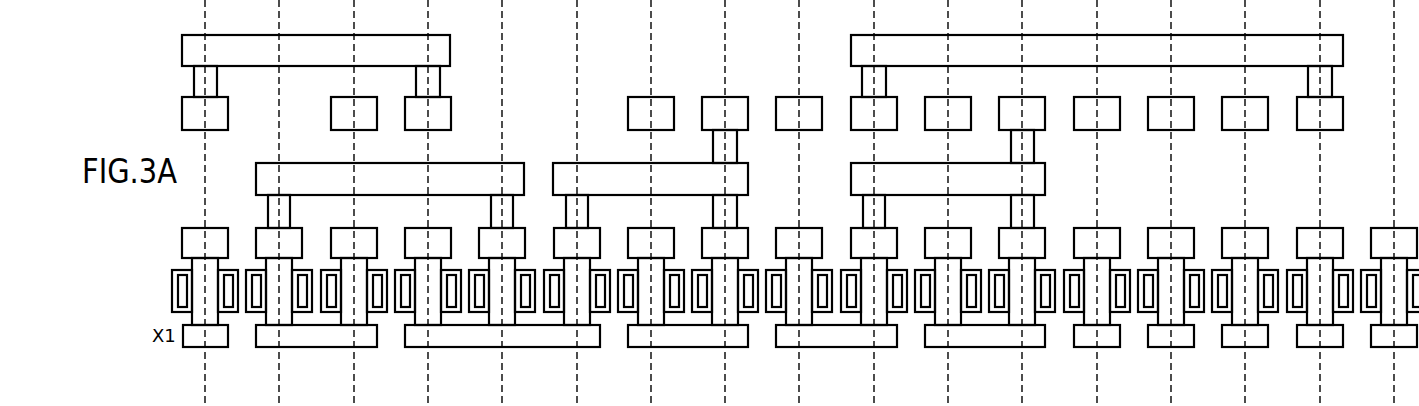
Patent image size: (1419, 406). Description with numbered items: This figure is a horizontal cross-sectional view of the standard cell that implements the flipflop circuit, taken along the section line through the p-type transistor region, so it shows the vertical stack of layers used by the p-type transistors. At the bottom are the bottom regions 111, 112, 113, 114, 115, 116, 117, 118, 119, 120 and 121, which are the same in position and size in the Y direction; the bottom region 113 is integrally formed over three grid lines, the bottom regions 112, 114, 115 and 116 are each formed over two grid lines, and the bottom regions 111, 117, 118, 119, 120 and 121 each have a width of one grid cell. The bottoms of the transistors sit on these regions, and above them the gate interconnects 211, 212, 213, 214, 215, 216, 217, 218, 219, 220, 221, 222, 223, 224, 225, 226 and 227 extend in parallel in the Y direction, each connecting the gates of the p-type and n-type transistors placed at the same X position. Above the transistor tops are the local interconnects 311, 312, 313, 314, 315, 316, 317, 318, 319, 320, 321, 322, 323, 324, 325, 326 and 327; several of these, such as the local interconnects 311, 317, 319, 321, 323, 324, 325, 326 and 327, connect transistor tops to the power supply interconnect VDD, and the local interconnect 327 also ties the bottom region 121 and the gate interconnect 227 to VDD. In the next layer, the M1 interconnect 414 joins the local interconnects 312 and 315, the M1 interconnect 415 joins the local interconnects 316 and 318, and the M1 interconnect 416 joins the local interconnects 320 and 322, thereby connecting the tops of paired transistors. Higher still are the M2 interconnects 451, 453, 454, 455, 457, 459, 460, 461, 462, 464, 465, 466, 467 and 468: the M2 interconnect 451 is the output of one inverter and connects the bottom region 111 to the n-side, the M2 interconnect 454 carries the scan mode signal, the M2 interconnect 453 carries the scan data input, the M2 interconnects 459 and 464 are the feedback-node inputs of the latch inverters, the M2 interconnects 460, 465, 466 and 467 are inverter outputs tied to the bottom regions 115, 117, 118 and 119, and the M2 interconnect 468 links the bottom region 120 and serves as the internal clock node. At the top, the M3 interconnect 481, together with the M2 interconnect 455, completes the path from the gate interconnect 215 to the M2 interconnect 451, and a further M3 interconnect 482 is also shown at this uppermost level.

The bottom region 111 is at (193, 348).
The bottom region 112 is at (295, 338).
The bottom region 113 is at (443, 338).
The bottom region 114 is at (667, 338).
The bottom region 115 is at (815, 338).
The bottom region 116 is at (962, 338).
The bottom region 117 is at (1108, 338).
The bottom region 118 is at (1181, 338).
The bottom region 119 is at (1257, 338).
The bottom region 120 is at (1332, 338).
The bottom region 121 is at (1406, 338).
The gate interconnect 211 is at (176, 288).
The gate interconnect 212 is at (255, 313).
The gate interconnect 213 is at (330, 313).
The gate interconnect 214 is at (403, 313).
The gate interconnect 215 is at (478, 313).
The gate interconnect 216 is at (552, 313).
The gate interconnect 217 is at (627, 313).
The gate interconnect 218 is at (701, 313).
The gate interconnect 219 is at (774, 313).
The gate interconnect 220 is at (849, 313).
The gate interconnect 221 is at (923, 313).
The gate interconnect 222 is at (998, 313).
The gate interconnect 223 is at (1073, 313).
The gate interconnect 224 is at (1147, 313).
The gate interconnect 225 is at (1221, 313).
The gate interconnect 226 is at (1296, 313).
The gate interconnect 227 is at (1370, 313).
The local interconnect 311 is at (193, 235).
The local interconnect 312 is at (261, 237).
The local interconnect 313 is at (336, 237).
The local interconnect 314 is at (410, 237).
The local interconnect 315 is at (484, 237).
The local interconnect 316 is at (559, 237).
The local interconnect 317 is at (633, 237).
The local interconnect 318 is at (707, 237).
The local interconnect 319 is at (781, 237).
The local interconnect 320 is at (856, 237).
The local interconnect 321 is at (930, 237).
The local interconnect 322 is at (1004, 237).
The local interconnect 323 is at (1079, 237).
The local interconnect 324 is at (1158, 237).
The local interconnect 325 is at (1232, 237).
The local interconnect 326 is at (1307, 237).
The local interconnect 327 is at (1381, 237).
The M1 interconnect 414 is at (343, 172).
The M1 interconnect 415 is at (633, 172).
The M1 interconnect 416 is at (935, 172).
The M2 interconnect 451 is at (222, 115).
The M2 interconnect 453 is at (261, 399).
The M2 interconnect 454 is at (335, 115).
The M2 interconnect 455 is at (445, 115).
The M2 interconnect 457 is at (632, 115).
The M2 interconnect 459 is at (709, 115).
The M2 interconnect 460 is at (783, 115).
The M2 interconnect 461 is at (858, 115).
The M2 interconnect 462 is at (932, 115).
The M2 interconnect 464 is at (1006, 115).
The M2 interconnect 465 is at (1081, 115).
The M2 interconnect 466 is at (1155, 115).
The M2 interconnect 467 is at (1229, 115).
The M2 interconnect 468 is at (1304, 115).
The M3 interconnect 481 is at (319, 45).
The M3 interconnect 482 is at (988, 45).